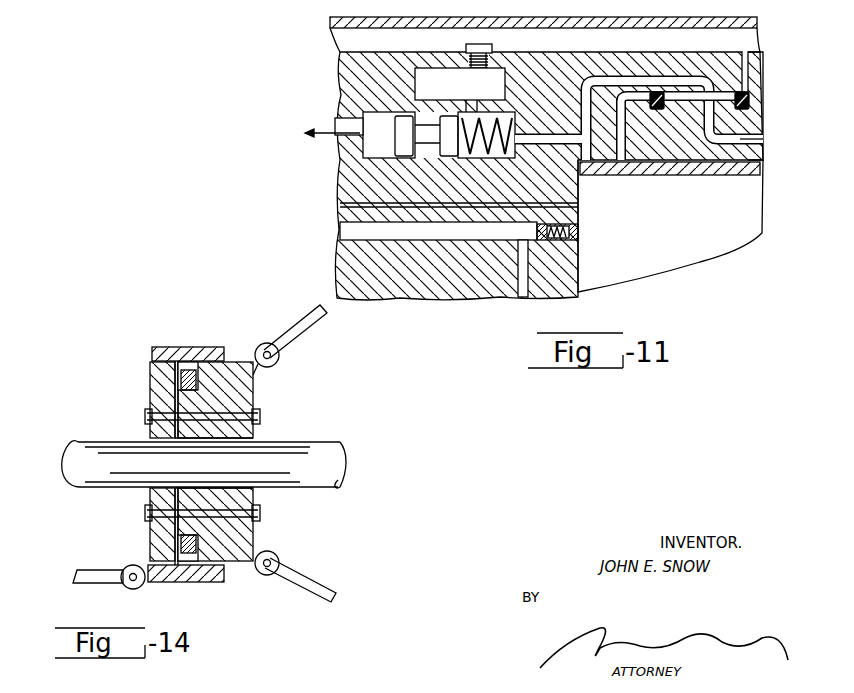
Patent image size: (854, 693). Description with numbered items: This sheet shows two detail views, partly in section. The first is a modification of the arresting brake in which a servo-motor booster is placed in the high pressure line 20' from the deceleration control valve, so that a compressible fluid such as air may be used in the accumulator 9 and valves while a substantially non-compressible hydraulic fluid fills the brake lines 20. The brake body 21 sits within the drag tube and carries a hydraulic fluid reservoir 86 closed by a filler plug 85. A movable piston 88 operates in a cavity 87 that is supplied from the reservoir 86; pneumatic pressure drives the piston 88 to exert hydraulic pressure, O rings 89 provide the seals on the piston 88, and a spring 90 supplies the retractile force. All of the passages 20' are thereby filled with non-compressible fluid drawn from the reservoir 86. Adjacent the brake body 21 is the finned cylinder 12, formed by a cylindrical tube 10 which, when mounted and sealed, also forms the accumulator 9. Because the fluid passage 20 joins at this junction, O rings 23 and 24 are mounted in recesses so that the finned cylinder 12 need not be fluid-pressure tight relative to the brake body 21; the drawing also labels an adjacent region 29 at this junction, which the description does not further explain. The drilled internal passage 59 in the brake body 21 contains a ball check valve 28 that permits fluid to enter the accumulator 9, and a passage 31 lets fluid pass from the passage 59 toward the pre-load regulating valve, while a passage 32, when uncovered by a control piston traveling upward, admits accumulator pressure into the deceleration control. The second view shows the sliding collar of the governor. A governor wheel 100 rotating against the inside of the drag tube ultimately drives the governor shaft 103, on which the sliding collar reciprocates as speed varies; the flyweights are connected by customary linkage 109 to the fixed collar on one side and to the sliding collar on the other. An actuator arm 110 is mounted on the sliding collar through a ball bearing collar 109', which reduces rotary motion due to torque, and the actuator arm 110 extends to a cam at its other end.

In FIG. 11, the governor wheel 100 is at (656, 0).
In FIG. 11, the brake body 21 is at (386, 64).
In FIG. 11, the filler plug 85 is at (494, 48).
In FIG. 11, the hydraulic fluid reservoir 86 is at (460, 84).
In FIG. 11, the cavity 87 is at (482, 120).
In FIG. 11, the movable piston 88 is at (472, 160).
In FIG. 11, the O rings 89 is at (446, 162).
In FIG. 11, the spring 90 is at (518, 130).
In FIG. 11, the chamber 29 is at (628, 136).
In FIG. 11, the O ring 23 is at (655, 92).
In FIG. 11, the O ring 24 is at (752, 103).
In FIG. 11, the finned cylinder 12 is at (761, 64).
In FIG. 11, the fluid passage 20 is at (299, 114).
In FIG. 11, the high pressure line 20' is at (764, 149).
In FIG. 11, the passage 32 is at (355, 200).
In FIG. 11, the cylindrical tube 10 is at (648, 172).
In FIG. 11, the accumulator 9 is at (678, 218).
In FIG. 11, the internal passage 59 is at (442, 240).
In FIG. 11, the ball check valve 28 is at (580, 252).
In FIG. 11, the passage 31 is at (528, 292).
In FIG. 14, the linkage 109 is at (308, 453).
In FIG. 14, the governor shaft 103 is at (315, 447).
In FIG. 14, the ball bearing collar 109' is at (175, 494).
In FIG. 14, the actuator arm 110 is at (84, 583).